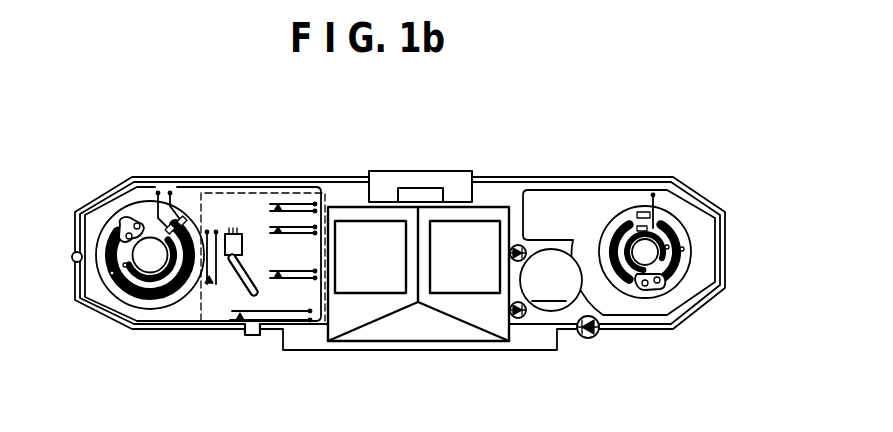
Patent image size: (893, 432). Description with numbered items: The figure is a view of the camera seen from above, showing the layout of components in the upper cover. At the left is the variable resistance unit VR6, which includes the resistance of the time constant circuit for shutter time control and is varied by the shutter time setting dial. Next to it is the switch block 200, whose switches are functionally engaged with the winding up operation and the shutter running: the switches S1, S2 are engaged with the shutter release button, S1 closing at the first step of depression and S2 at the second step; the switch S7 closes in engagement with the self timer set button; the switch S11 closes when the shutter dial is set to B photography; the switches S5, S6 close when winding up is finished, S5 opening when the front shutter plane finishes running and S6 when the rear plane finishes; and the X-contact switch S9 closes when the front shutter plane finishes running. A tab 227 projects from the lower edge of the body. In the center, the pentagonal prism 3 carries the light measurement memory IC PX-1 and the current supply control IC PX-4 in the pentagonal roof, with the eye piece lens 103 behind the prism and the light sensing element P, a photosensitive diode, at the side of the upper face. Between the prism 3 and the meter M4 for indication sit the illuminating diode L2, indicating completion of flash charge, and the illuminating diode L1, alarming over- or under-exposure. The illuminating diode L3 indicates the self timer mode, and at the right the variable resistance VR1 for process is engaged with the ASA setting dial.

The variable resistance unit VR6 is at (130, 231).
The switch block 200 is at (241, 191).
The light measurement memory IC PX-1 is at (355, 240).
The light sensing element P is at (416, 194).
The eye piece lens 103 is at (460, 181).
The switch S6 is at (268, 205).
The X-contact switch S9 is at (270, 231).
The switch S5 is at (272, 277).
The self timer switch S7 is at (291, 318).
The B photography switch S11 is at (208, 286).
The first release switch S1 is at (242, 284).
The second release switch S2 is at (239, 263).
The connector tab 227 is at (252, 336).
The pentagonal prism 3 is at (428, 336).
The current supply control IC PX-4 is at (455, 285).
The illuminating diode for flash charge indication L2 is at (511, 250).
The illuminating diode for exposure alarm L1 is at (511, 311).
The illuminating diode for self timer indication L3 is at (589, 339).
The meter for indication M4 is at (551, 280).
The variable resistance for process VR1 is at (653, 291).